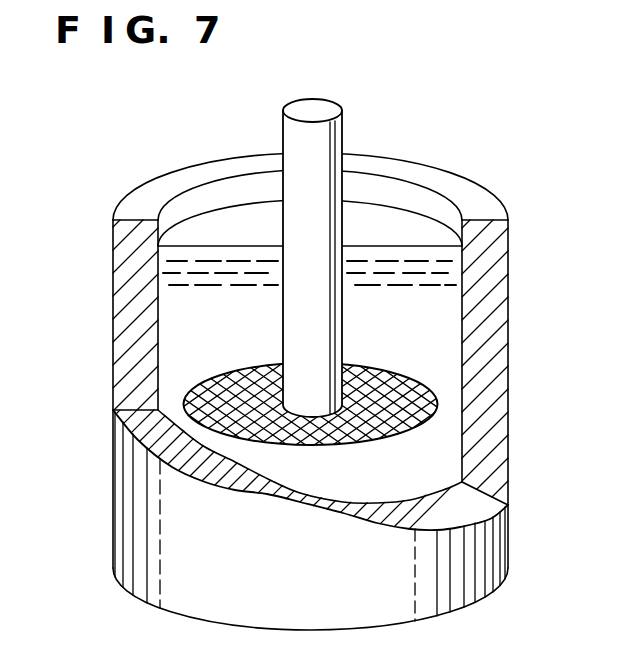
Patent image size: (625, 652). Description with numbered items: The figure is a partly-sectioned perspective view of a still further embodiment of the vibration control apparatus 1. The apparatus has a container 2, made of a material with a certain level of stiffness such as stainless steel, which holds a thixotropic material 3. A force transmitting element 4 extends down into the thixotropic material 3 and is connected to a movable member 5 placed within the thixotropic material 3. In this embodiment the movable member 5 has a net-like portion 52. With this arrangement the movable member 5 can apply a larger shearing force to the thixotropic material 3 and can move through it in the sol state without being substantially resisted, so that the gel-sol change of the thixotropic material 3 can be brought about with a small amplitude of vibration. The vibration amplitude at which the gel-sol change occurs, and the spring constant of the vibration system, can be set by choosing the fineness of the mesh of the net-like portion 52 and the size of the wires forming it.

The vibration control apparatus 1 is at (112, 340).
The container 2 is at (497, 194).
The thixotropic material 3 is at (452, 332).
The force transmitting element 4 is at (342, 140).
The movable member 5 is at (441, 405).
The net-like portion 52 is at (407, 428).